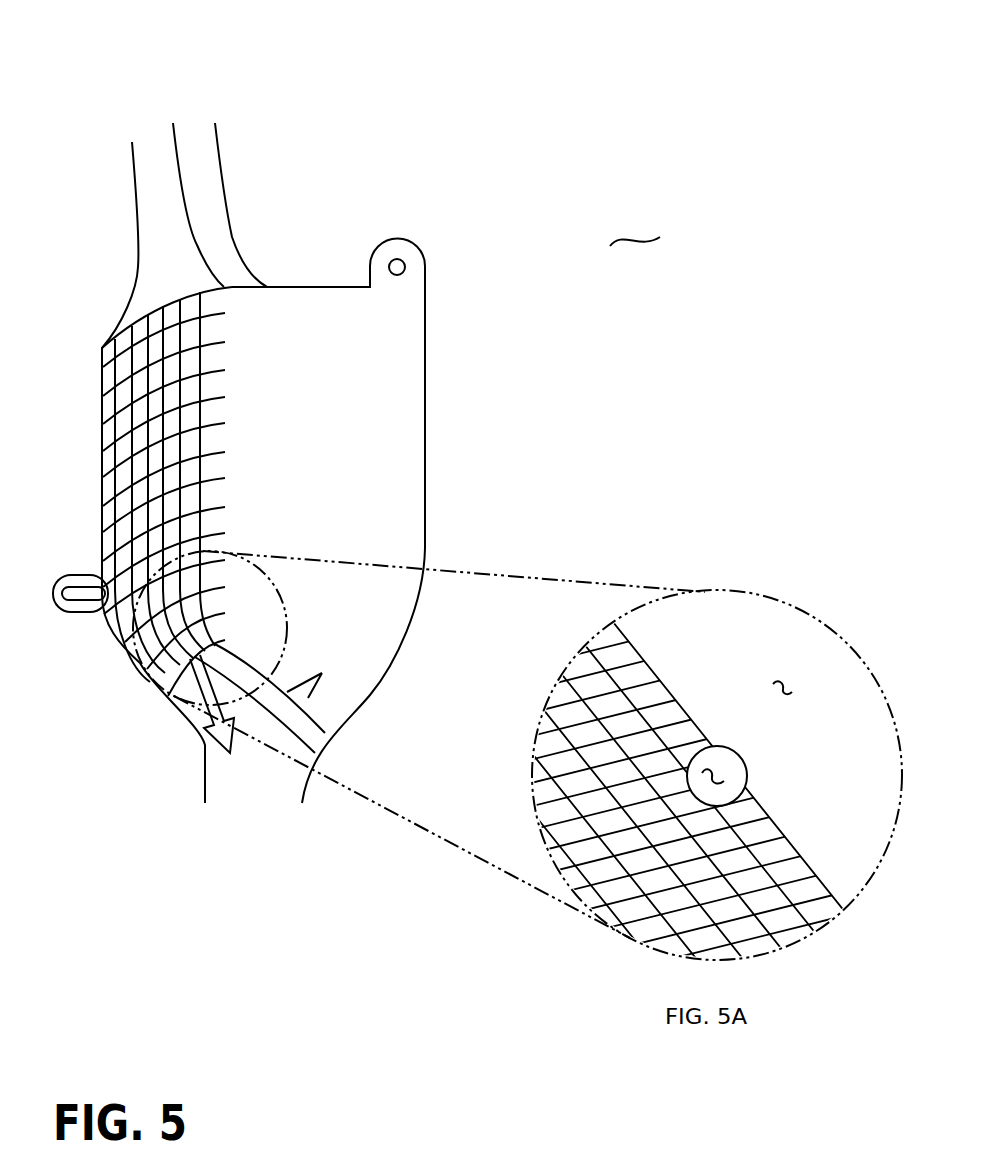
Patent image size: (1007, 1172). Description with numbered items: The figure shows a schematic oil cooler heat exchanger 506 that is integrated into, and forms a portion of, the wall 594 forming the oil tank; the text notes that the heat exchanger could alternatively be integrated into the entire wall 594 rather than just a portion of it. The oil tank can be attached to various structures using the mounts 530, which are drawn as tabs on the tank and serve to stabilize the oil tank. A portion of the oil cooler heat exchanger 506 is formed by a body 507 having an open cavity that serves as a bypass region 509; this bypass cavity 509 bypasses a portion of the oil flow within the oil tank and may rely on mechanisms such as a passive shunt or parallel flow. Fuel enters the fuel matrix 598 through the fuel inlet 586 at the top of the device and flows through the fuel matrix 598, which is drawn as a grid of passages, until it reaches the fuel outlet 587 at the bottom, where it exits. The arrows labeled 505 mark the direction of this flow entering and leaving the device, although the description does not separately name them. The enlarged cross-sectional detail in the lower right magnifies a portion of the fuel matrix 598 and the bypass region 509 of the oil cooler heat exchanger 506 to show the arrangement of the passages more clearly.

In FIG. 5, the blood flow direction 505 is at (200, 143).
In FIG. 5A, the blood flow direction 505 is at (717, 776).
In FIG. 5, the oil cooler heat exchanger 506 is at (635, 228).
In FIG. 5, the body 507 is at (445, 472).
In FIG. 5, the bypass region 509 is at (322, 673).
In FIG. 5A, the bypass region 509 is at (790, 687).
In FIG. 5, the mounts 530 is at (427, 230).
In FIG. 5, the fuel inlet 586 is at (160, 158).
In FIG. 5, the fuel outlet 587 is at (220, 718).
In FIG. 5, the wall 594 is at (385, 410).
In FIG. 5, the fuel matrix 598 is at (125, 477).
In FIG. 5A, the fuel matrix 598 is at (640, 887).